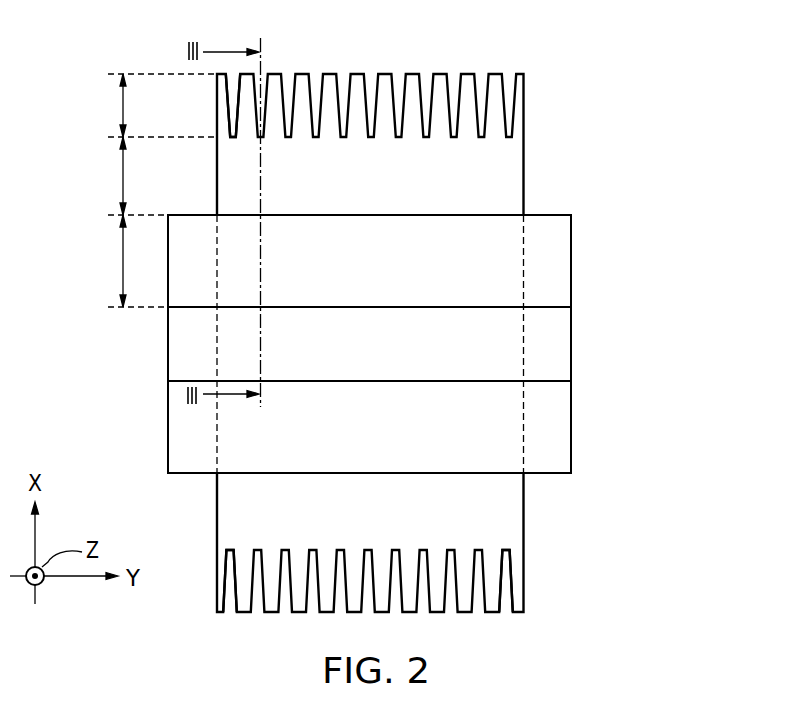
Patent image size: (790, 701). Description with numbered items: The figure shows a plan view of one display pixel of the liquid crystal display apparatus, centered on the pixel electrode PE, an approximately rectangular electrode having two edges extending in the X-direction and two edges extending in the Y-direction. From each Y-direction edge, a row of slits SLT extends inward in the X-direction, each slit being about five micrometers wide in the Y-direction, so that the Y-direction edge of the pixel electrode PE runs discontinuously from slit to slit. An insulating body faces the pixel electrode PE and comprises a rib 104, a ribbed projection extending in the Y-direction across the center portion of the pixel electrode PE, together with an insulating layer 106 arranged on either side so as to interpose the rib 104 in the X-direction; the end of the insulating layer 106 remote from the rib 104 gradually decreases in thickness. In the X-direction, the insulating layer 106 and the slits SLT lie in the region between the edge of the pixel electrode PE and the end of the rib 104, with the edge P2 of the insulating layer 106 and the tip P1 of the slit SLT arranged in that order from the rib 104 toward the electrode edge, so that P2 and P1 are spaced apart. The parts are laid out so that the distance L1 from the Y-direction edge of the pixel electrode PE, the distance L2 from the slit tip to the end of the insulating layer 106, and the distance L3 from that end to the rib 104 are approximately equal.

The pixel electrode PE is at (524, 163).
The slit SLT is at (257, 574).
The tip of the slit P1 is at (231, 138).
The edge of the insulating layer P2 is at (248, 214).
The insulating layer 106 is at (571, 259).
The rib 104 is at (571, 338).
The distance from the edge of the pixel electrode L1 is at (162, 105).
The distance from the tip of the slit to the end of the insulating layer L2 is at (138, 176).
The distance from the end of the insulating layer to the rib L3 is at (138, 261).